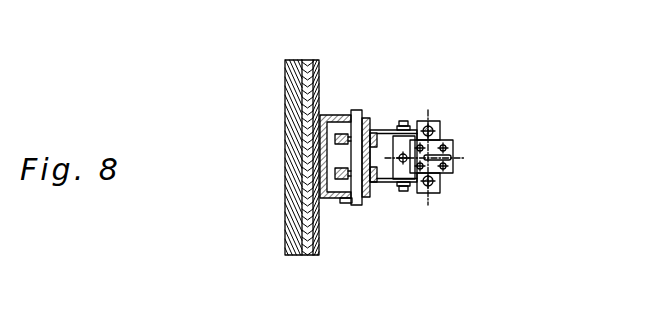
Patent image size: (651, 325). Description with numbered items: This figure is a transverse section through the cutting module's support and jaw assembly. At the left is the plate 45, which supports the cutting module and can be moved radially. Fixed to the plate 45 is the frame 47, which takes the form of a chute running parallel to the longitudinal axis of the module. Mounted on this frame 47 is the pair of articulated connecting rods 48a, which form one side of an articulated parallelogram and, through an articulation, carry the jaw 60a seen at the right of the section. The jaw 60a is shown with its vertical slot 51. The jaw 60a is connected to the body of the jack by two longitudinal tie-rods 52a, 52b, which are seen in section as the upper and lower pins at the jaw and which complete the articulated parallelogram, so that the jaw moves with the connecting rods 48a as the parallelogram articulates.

The plate 45 is at (318, 70).
The frame 47 is at (333, 112).
The connecting rod 48a is at (388, 222).
The vertical slot 51 is at (453, 157).
The longitudinal tie-rod 52a is at (433, 127).
The longitudinal tie-rod 52b is at (440, 188).
The jaw 60a is at (453, 170).